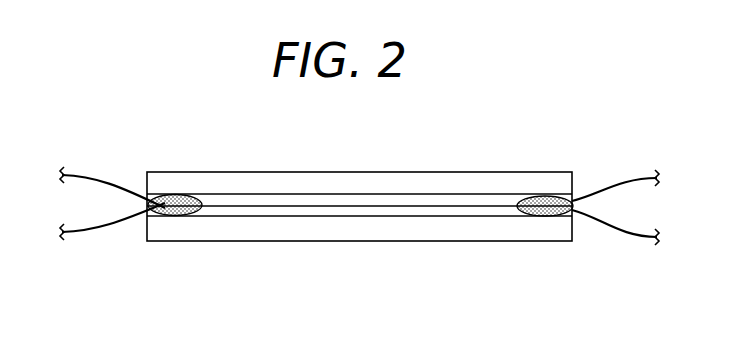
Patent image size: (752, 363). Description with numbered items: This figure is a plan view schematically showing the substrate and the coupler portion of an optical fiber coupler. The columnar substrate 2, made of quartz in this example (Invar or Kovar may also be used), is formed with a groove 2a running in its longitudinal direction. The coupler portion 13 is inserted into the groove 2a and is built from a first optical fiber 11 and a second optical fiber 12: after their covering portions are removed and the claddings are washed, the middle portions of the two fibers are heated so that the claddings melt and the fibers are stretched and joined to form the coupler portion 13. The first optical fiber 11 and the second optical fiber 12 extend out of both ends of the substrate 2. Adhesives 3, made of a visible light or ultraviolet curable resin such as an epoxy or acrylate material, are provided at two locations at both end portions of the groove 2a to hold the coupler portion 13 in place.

The substrate 2 is at (418, 230).
The groove 2a is at (311, 211).
The adhesive 3 is at (183, 217).
The first optical fiber 11 is at (630, 172).
The second optical fiber 12 is at (627, 238).
The coupler portion 13 is at (368, 207).